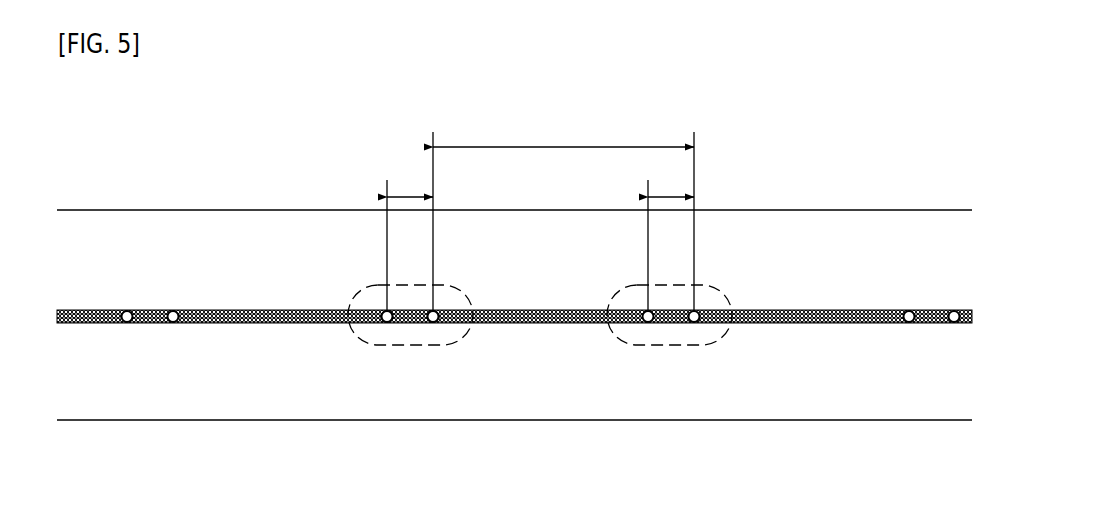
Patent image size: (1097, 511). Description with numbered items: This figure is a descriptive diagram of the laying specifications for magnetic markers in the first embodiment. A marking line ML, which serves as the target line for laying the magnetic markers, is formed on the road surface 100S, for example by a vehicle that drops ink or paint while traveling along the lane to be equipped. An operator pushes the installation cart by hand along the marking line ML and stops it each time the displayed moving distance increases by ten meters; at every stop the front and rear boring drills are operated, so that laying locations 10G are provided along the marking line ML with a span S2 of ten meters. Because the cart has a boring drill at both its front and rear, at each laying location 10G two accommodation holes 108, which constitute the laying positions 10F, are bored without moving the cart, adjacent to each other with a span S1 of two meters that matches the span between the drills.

The marking line ML is at (243, 309).
The road surface 100S is at (783, 257).
The laying position 10F is at (382, 321).
The accommodation hole 108 is at (382, 405).
The laying location 10G is at (397, 345).
The span S1 is at (540, 237).
The span S2 is at (563, 214).